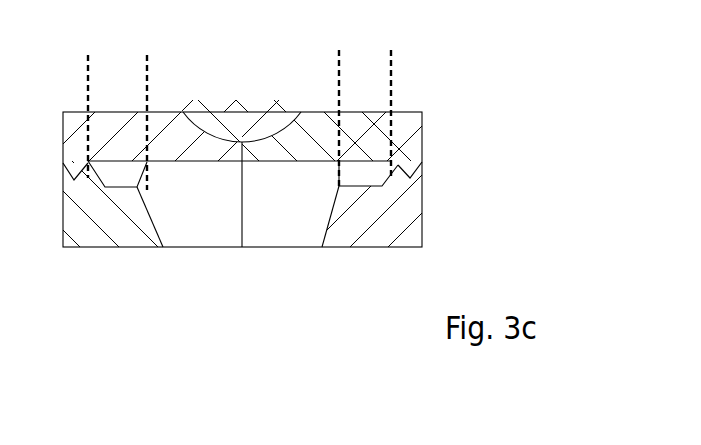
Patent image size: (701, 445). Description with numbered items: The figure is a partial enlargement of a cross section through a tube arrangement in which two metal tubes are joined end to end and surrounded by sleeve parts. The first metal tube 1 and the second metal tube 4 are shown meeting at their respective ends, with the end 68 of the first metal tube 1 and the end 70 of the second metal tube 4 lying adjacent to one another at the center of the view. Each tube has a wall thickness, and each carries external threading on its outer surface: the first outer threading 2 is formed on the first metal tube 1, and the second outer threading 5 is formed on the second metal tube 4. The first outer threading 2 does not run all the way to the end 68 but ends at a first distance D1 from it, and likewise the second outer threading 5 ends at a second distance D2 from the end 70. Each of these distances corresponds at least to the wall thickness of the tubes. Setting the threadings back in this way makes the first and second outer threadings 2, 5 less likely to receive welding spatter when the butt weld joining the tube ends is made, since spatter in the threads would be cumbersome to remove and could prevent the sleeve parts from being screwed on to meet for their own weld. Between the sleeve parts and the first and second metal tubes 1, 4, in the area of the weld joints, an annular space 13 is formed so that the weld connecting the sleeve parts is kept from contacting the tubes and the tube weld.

The first metal tube 1 is at (92, 243).
The first outer threading 2 is at (69, 158).
The second metal tube 4 is at (414, 238).
The second outer threading 5 is at (408, 157).
The annular space 13 is at (134, 177).
The end of the first metal tube 68 is at (250, 244).
The end of the second metal tube 70 is at (236, 224).
The first distance D1 is at (139, 68).
The second distance D2 is at (383, 77).